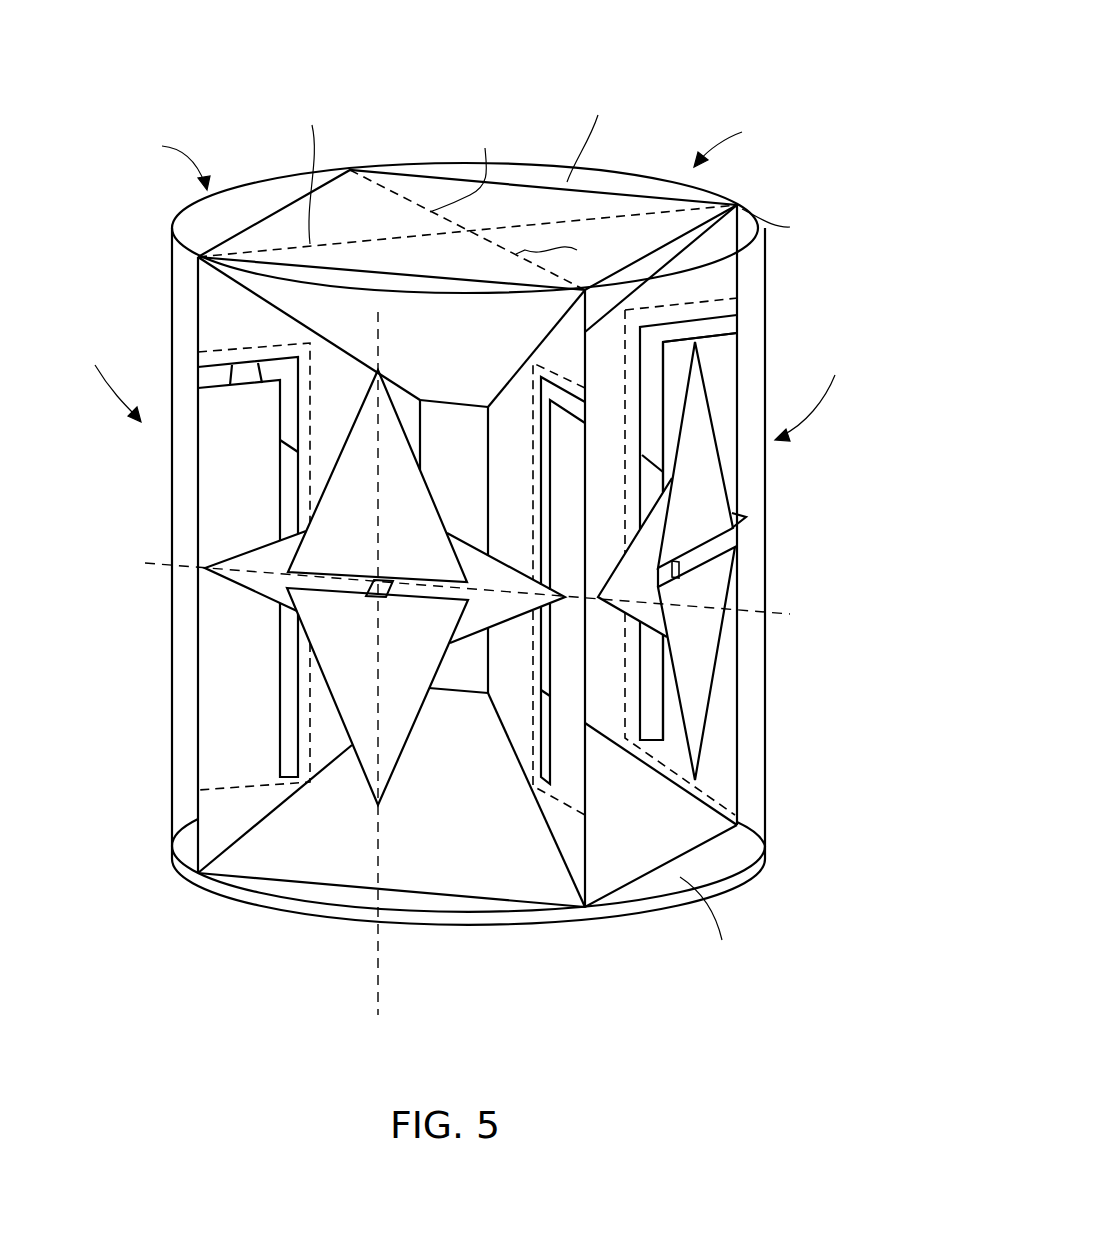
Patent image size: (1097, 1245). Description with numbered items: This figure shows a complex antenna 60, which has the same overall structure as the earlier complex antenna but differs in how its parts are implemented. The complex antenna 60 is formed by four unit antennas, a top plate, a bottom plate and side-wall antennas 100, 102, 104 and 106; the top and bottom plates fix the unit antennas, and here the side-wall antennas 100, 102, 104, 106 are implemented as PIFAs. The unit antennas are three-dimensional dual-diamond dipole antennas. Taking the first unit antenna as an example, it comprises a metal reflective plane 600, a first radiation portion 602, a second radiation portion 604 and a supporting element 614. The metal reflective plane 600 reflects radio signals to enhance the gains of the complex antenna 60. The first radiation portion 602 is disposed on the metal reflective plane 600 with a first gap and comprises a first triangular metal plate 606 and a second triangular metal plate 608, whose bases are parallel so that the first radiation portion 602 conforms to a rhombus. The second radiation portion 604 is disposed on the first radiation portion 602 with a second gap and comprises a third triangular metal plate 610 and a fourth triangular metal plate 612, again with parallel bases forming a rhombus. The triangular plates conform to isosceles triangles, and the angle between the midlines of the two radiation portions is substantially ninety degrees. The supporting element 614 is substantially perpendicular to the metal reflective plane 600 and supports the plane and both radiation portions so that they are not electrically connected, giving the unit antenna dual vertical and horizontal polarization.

The complex antenna 60 is at (656, 74).
The side-wall antenna 100 is at (212, 690).
The side-wall antenna 102 is at (572, 838).
The side-wall antenna 104 is at (715, 745).
The side-wall antenna 106 is at (408, 200).
The metal reflective plane 600 is at (476, 446).
The first radiation portion 602 is at (465, 953).
The second radiation portion 604 is at (122, 468).
The first triangular metal plate 606 is at (338, 588).
The second triangular metal plate 608 is at (507, 603).
The third triangular metal plate 610 is at (330, 661).
The fourth triangular metal plate 612 is at (345, 497).
The supporting element 614 is at (397, 578).